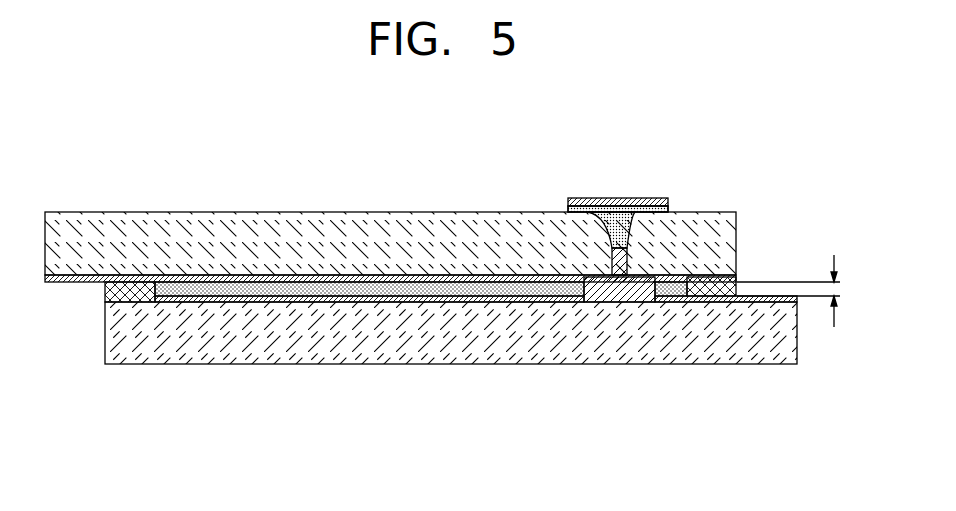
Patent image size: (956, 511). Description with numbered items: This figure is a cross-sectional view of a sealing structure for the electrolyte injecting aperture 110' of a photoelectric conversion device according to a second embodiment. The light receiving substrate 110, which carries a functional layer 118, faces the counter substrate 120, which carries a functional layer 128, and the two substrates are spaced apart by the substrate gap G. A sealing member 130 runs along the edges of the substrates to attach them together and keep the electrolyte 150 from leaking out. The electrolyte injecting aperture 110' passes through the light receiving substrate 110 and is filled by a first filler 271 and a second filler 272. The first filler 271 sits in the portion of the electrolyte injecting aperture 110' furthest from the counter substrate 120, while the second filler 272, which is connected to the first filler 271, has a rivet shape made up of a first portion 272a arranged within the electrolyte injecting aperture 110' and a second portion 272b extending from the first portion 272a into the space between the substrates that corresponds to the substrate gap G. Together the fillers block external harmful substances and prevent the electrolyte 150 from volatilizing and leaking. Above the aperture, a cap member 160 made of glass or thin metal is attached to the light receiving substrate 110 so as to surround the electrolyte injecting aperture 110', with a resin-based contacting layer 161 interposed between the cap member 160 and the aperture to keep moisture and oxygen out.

The light receiving substrate 110 is at (390, 208).
The electrolyte injecting aperture 110' is at (702, 230).
The functional layer 118 is at (305, 278).
The counter substrate 120 is at (413, 364).
The functional layer 128 is at (300, 302).
The sealing member 130 is at (709, 298).
The electrolyte 150 is at (494, 292).
The cap member 160 is at (620, 200).
The contacting layer 161 is at (668, 211).
The first filler 271 is at (580, 199).
The second filler 272 is at (617, 365).
The first portion 272a is at (610, 258).
The second portion 272b is at (637, 290).
The substrate gap G is at (797, 291).